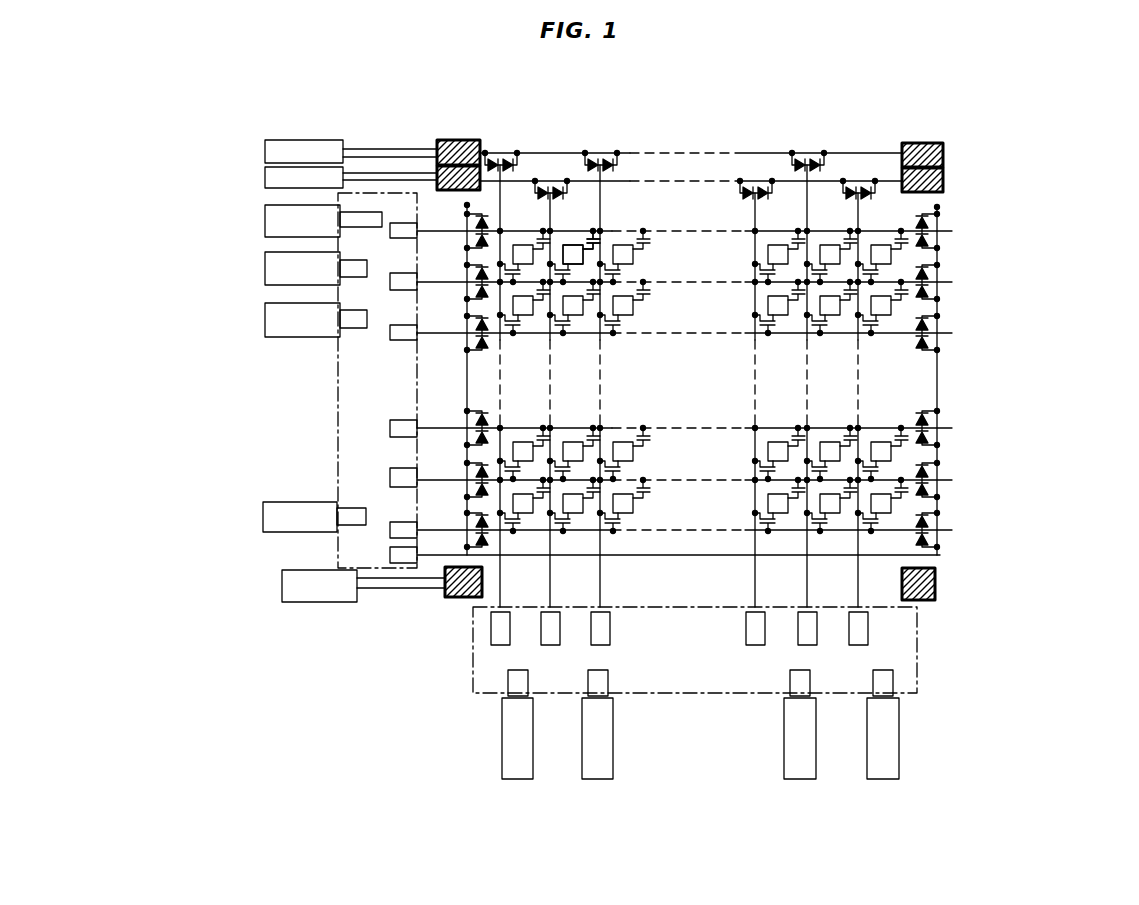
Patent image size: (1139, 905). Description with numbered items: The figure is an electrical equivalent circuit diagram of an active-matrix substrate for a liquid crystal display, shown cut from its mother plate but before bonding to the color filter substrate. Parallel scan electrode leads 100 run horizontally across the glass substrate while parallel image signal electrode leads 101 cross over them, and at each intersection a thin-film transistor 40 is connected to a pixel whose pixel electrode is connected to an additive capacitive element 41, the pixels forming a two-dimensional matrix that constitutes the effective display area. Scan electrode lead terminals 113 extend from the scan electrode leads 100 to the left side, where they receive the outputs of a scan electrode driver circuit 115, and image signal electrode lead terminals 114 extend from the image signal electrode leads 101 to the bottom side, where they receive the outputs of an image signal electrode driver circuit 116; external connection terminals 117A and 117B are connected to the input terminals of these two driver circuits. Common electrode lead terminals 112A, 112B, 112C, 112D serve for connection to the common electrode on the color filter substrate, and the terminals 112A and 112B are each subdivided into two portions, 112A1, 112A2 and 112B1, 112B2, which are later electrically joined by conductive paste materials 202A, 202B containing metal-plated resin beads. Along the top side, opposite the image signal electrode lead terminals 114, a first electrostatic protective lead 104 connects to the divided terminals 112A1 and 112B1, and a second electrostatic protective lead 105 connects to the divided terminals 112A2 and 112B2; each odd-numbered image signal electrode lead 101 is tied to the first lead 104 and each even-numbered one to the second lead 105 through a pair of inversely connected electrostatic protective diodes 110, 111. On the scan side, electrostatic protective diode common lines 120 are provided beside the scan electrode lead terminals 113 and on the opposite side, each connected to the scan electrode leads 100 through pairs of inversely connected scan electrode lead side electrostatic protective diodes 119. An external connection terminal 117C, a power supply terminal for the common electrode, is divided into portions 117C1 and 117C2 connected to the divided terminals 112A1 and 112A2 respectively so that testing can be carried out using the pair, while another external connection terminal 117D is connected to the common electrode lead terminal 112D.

The scan electrode leads 100 is at (588, 340).
The thin-film transistors 40 is at (573, 275).
The additive capacitive element 41 is at (602, 242).
The image signal electrode leads 101 is at (603, 310).
The first electrostatic protective lead 104 is at (859, 152).
The second electrostatic protective lead 105 is at (753, 180).
The electrostatic protective diode 110 is at (509, 150).
The electrostatic protective diode 111 is at (537, 178).
The common electrode lead terminal 112A is at (397, 122).
The divided common electrode lead terminal 112A1 is at (462, 140).
The divided common electrode lead terminal 112A2 is at (440, 170).
The conductive paste material 202A is at (437, 122).
The common electrode lead terminal 112B is at (1008, 131).
The divided common electrode lead terminal 112B1 is at (945, 152).
The divided common electrode lead terminal 112B2 is at (945, 185).
The conductive paste material 202B is at (968, 131).
The common electrode lead terminal 112C is at (937, 585).
The common electrode lead terminal 112D is at (450, 600).
The scan electrode lead terminals 113 is at (393, 480).
The image signal electrode lead terminals 114 is at (483, 633).
The scan electrode driver circuit 115 is at (353, 375).
The image signal electrode driver circuit 116 is at (478, 670).
The external connection terminals 117A is at (237, 202).
The external connection terminals 117B is at (900, 785).
The external connection terminal 117C is at (262, 159).
The divided external connection terminal 117C1 is at (267, 150).
The divided external connection terminal 117C2 is at (267, 178).
The external connection terminal 117D is at (287, 585).
The scan electrode lead side electrostatic protective diodes 119 is at (466, 340).
The electrostatic protective diode common lines 120 is at (465, 400).